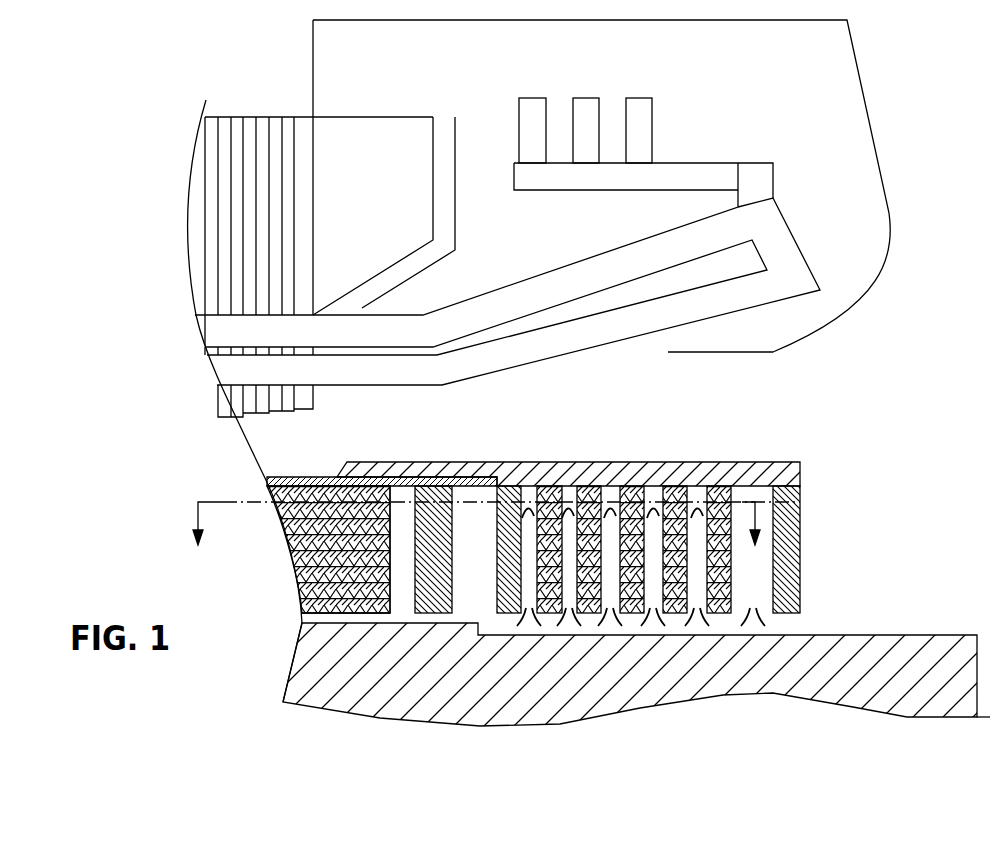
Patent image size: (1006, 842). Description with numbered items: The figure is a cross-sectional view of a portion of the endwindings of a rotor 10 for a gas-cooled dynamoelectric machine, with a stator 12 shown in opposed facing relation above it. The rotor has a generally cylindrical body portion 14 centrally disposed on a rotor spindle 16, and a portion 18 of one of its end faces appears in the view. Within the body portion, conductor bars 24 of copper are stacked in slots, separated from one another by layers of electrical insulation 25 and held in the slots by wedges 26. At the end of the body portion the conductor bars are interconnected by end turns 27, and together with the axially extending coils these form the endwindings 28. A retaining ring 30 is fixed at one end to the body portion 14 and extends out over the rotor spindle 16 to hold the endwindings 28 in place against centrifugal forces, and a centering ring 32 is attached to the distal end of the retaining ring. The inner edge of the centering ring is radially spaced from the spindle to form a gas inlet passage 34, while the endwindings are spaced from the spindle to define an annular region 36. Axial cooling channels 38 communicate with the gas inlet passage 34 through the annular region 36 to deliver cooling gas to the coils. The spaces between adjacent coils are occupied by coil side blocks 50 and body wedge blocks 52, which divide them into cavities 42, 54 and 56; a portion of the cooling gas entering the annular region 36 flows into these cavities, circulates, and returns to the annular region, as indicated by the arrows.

The rotor 10 is at (878, 466).
The stator 12 is at (903, 150).
The body portion 14 is at (305, 660).
The rotor spindle 16 is at (773, 685).
The end face portion 18 is at (465, 617).
The conductor bars 24 is at (308, 590).
The layers of electrical insulation 25 is at (295, 548).
The wedges 26 is at (272, 480).
The end turns 27 is at (587, 613).
The endwindings 28 is at (722, 618).
The retaining ring 30 is at (575, 467).
The centering ring 32 is at (795, 535).
The gas inlet passage 34 is at (787, 632).
The annular region 36 is at (649, 627).
The axial cooling channels 38 is at (403, 617).
The cavities 42 is at (697, 490).
The coil side blocks 50 is at (510, 492).
The body wedge blocks 52 is at (434, 495).
The cavities 54 is at (472, 495).
The cavities 56 is at (398, 492).